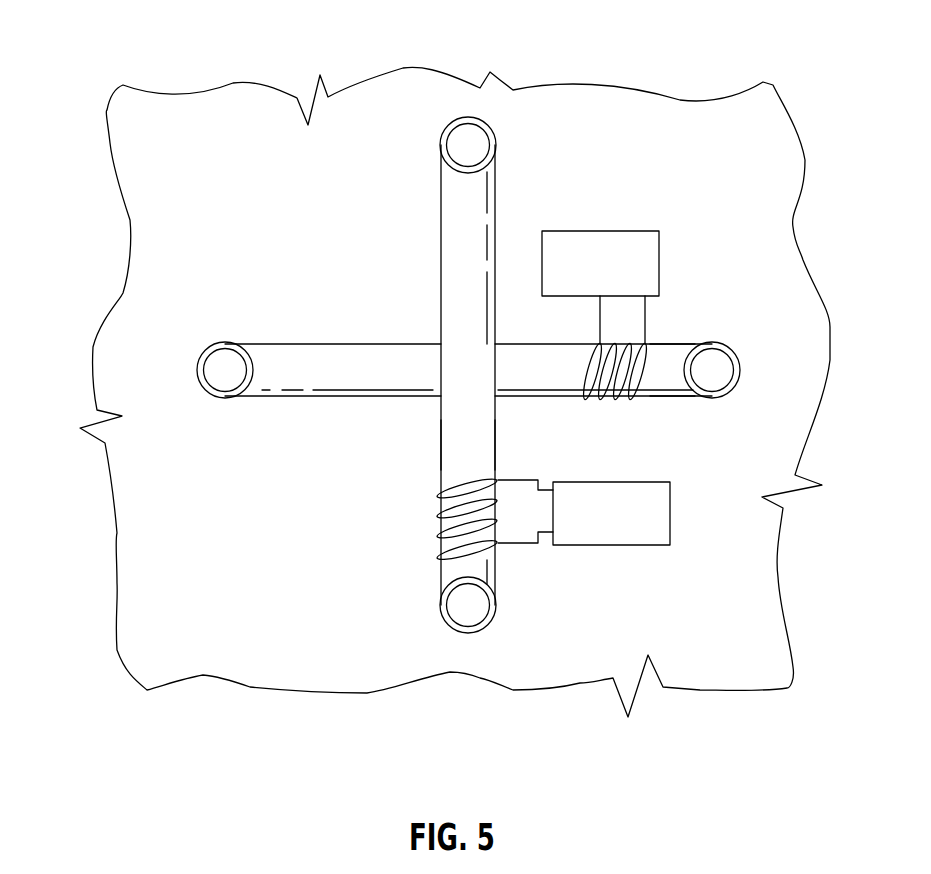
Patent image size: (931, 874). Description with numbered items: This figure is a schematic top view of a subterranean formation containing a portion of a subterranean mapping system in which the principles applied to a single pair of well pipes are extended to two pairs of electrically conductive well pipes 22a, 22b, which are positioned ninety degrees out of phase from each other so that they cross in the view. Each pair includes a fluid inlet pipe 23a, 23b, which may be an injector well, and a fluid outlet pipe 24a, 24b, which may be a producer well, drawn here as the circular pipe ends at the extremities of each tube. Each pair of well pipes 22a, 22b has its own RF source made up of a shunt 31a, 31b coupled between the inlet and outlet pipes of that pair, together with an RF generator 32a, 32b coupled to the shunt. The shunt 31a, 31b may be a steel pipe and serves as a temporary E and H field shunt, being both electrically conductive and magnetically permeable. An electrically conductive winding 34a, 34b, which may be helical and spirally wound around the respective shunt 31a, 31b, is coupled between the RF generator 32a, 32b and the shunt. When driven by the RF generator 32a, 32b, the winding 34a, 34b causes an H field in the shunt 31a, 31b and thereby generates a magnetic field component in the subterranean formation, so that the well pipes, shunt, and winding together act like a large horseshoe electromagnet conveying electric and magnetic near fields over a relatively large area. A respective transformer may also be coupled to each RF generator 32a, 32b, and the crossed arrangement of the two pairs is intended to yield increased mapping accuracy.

The pair of electrically conductive well pipes 22a is at (203, 355).
The pair of electrically conductive well pipes 22b is at (443, 130).
The fluid inlet pipe 23a is at (222, 342).
The fluid inlet pipe 23b is at (478, 117).
The fluid outlet pipe 24a is at (733, 397).
The fluid outlet pipe 24b is at (447, 627).
The shunt 31a is at (666, 352).
The shunt 31b is at (457, 450).
The RF generator 32a is at (652, 231).
The RF generator 32b is at (652, 545).
The electrically conductive winding 34a is at (629, 400).
The electrically conductive winding 34b is at (440, 560).